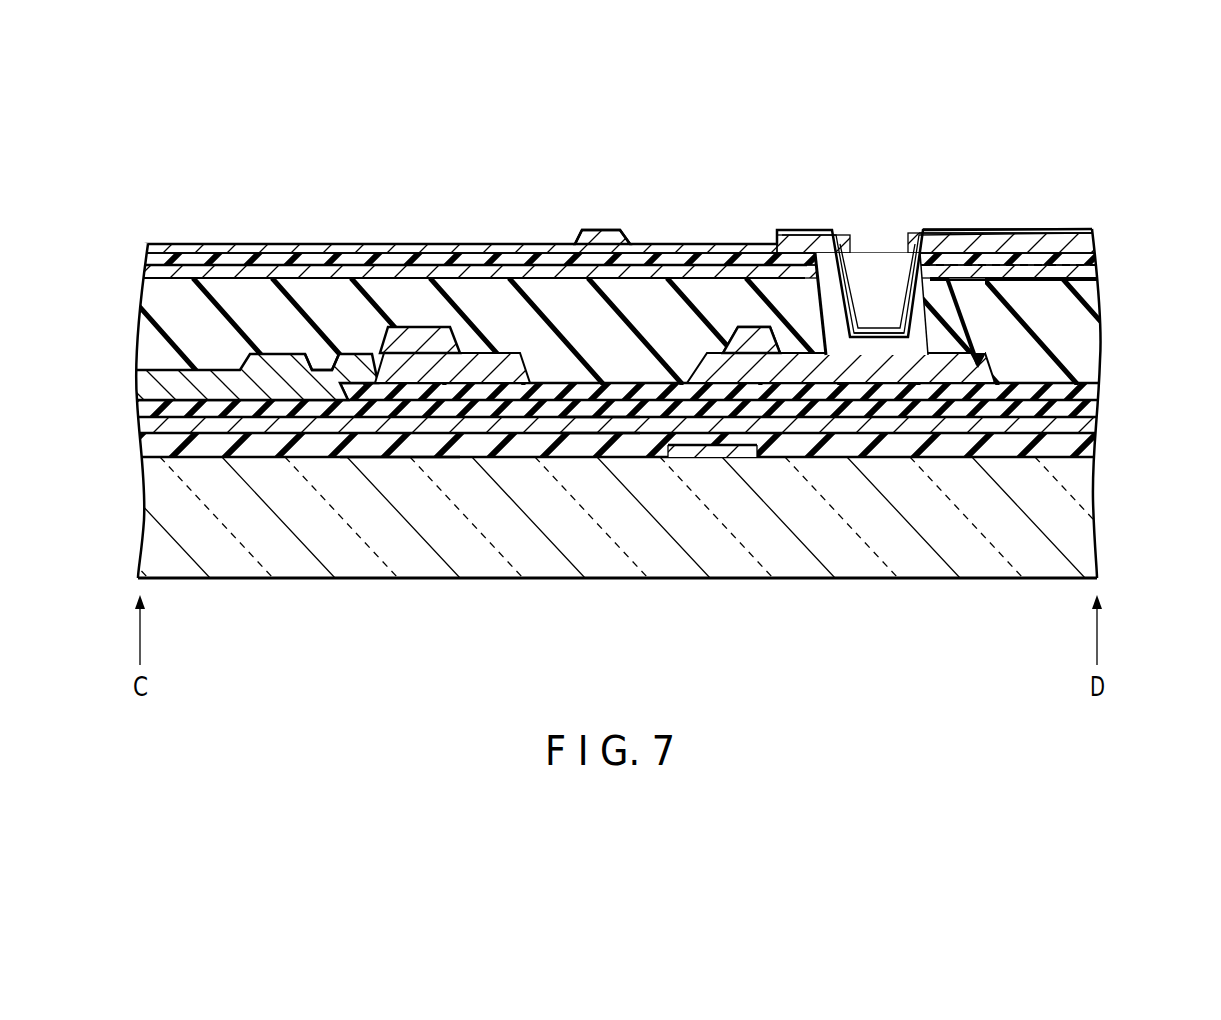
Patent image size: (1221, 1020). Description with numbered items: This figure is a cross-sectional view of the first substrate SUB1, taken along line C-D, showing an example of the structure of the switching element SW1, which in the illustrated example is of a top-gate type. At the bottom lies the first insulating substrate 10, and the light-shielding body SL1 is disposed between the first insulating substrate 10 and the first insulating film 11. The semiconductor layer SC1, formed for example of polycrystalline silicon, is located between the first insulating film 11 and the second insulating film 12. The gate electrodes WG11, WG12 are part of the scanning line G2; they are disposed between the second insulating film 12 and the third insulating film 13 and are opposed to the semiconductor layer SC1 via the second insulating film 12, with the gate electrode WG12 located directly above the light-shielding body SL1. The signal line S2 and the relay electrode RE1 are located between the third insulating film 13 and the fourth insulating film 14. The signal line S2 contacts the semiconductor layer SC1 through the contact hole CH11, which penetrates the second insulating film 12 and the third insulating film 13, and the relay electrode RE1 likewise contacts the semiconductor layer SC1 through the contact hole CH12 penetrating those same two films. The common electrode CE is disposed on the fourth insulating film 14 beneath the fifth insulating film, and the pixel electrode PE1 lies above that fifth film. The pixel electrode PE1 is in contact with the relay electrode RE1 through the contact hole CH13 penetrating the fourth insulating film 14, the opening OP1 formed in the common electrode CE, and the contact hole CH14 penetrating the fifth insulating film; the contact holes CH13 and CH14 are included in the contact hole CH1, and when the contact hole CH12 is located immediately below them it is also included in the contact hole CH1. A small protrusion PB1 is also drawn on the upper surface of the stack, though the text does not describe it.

The first insulating substrate 10 is at (1090, 528).
The first insulating film 11 is at (1085, 450).
The second insulating film 12 is at (1085, 425).
The third insulating film 13 is at (1090, 410).
The fourth insulating film 14 is at (1090, 332).
The common electrode CE is at (1082, 272).
The contact hole CH1 is at (925, 93).
The contact hole CH11 is at (322, 370).
The contact hole CH12 is at (978, 368).
The contact hole CH13 is at (856, 273).
The contact hole CH14 is at (883, 245).
The opening OP1 is at (897, 243).
The protrusion PB1 is at (600, 240).
The pixel electrode PE1 is at (1037, 243).
The relay electrode RE1 is at (950, 370).
The signal line S2 is at (282, 368).
The semiconductor layer SC1 is at (597, 425).
The light-shielding body SL1 is at (748, 457).
The first substrate SUB1 is at (1100, 207).
The switching element SW1 is at (352, 463).
The gate electrode WG11 is at (413, 373).
The gate electrode WG12 is at (723, 380).
The scanning line G2 is at (740, 273).